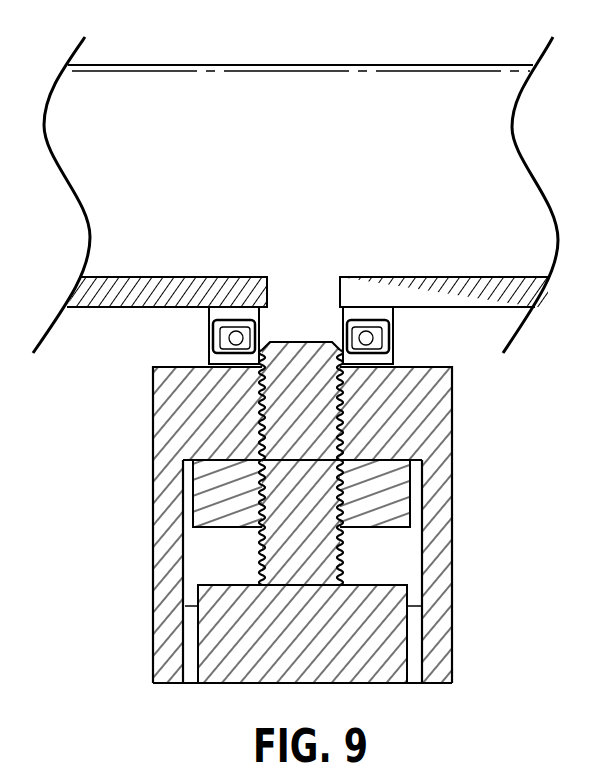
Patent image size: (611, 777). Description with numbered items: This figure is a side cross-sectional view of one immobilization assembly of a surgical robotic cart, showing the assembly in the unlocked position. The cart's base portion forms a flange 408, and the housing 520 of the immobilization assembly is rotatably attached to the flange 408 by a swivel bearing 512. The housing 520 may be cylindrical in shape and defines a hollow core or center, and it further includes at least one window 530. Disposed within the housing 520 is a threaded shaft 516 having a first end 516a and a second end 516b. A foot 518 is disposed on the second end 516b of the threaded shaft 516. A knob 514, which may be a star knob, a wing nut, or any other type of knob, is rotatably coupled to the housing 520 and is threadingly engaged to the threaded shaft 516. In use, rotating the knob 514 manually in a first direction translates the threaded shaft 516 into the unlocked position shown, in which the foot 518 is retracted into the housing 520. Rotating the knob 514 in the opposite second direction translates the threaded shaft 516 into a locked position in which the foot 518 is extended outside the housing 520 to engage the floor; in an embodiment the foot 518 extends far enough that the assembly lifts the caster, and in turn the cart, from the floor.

The flange 408 is at (525, 284).
The swivel bearing 512 is at (395, 350).
The knob 514 is at (190, 492).
The threaded shaft 516 is at (342, 548).
The first end of threaded shaft 516a is at (302, 340).
The second end of threaded shaft 516b is at (343, 582).
The foot 518 is at (397, 667).
The housing 520 is at (440, 425).
The window 530 is at (190, 548).